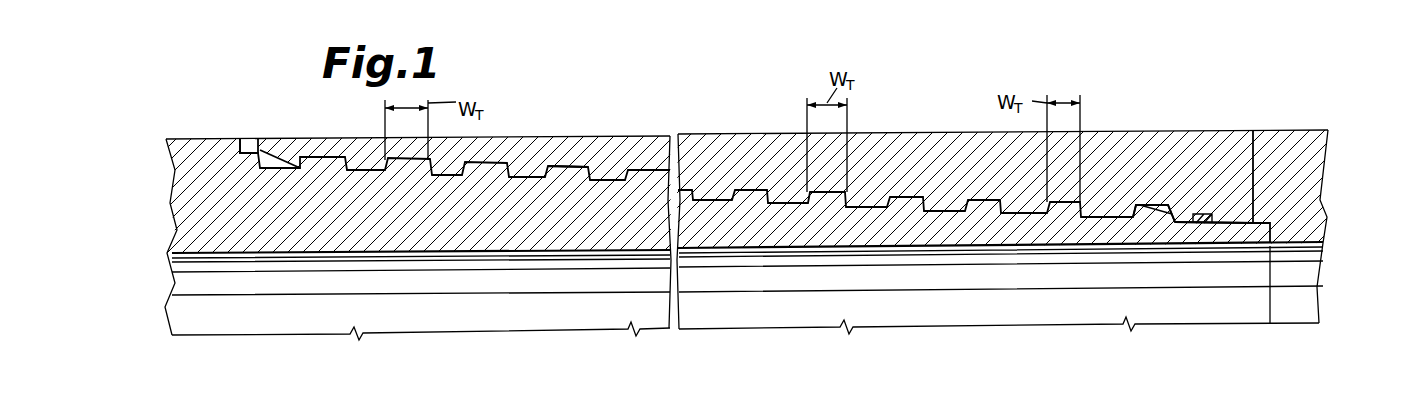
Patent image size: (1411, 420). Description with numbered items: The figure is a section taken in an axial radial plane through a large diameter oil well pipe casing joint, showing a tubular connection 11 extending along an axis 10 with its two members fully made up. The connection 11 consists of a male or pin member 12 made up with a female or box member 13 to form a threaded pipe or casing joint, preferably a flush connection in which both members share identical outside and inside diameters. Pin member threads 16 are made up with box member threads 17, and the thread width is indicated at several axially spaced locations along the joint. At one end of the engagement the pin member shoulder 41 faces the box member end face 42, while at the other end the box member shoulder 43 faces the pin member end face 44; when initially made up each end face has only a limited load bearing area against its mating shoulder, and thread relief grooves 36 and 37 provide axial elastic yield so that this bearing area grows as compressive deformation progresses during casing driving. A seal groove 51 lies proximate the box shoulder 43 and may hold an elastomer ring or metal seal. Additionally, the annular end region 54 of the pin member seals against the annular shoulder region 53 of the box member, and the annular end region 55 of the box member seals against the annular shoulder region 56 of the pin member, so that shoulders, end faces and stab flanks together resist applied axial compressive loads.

The axis 10 is at (553, 330).
The tubular connection 11 is at (712, 118).
The pin member 12 is at (398, 233).
The box member 13 is at (870, 197).
The pin member threads 16 is at (568, 167).
The box member threads 17 is at (612, 178).
The thread relief groove 36 is at (270, 168).
The thread relief groove 37 is at (1157, 205).
The pin member shoulder 41 is at (240, 150).
The box member end face 42 is at (190, 193).
The box member shoulder 43 is at (1295, 238).
The pin member end face 44 is at (1251, 247).
The seal groove 51 is at (1200, 214).
The annular shoulder region of the box member 53 is at (1254, 222).
The annular end region of the pin member 54 is at (1220, 227).
The annular end region of the box member 55 is at (268, 146).
The annular shoulder region of the pin member 56 is at (238, 157).